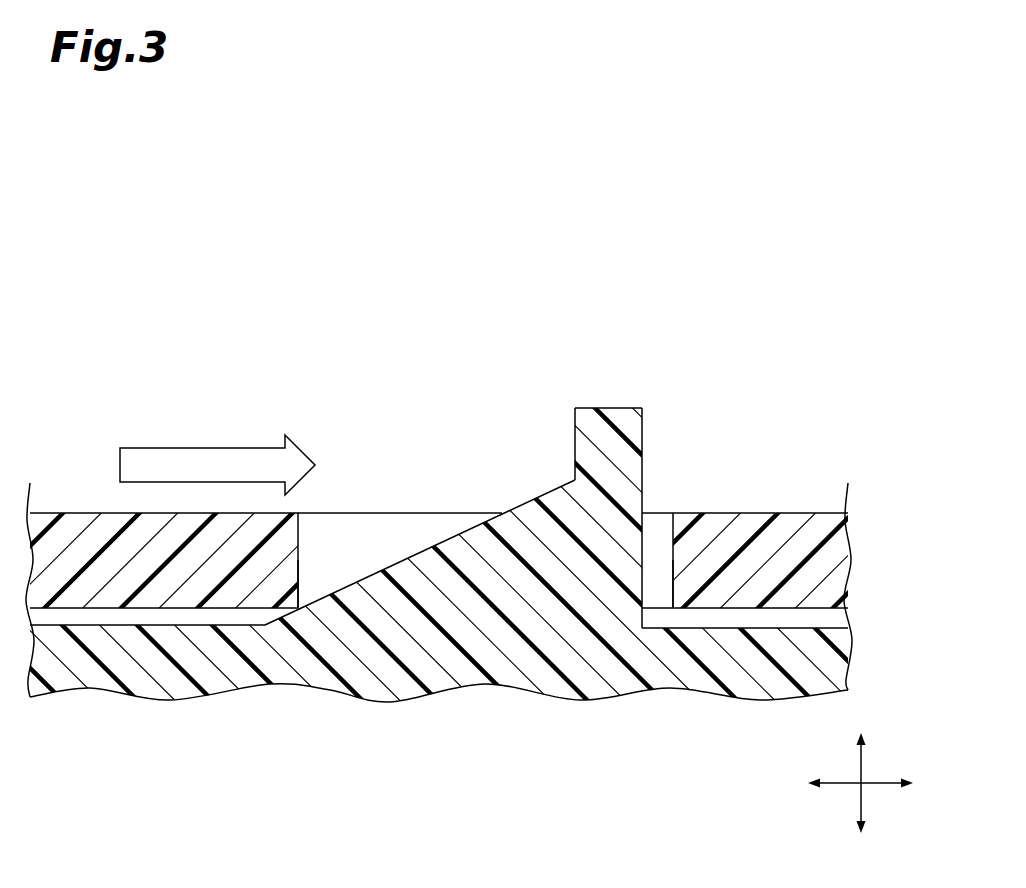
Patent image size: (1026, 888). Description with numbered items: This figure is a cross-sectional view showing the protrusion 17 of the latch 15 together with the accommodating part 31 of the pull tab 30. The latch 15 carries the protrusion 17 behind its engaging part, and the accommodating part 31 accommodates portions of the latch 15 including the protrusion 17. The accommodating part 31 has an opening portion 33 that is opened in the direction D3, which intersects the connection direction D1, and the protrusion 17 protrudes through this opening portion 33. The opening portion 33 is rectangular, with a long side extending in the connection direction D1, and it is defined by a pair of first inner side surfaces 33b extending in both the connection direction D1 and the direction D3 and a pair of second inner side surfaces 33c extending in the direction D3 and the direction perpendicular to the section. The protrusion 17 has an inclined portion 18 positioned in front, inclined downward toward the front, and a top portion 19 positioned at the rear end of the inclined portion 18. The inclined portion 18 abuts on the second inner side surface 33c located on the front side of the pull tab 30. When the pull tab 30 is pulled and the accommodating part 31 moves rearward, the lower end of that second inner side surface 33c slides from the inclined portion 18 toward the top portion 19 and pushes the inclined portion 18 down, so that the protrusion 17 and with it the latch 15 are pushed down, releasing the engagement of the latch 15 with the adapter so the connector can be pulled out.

The latch 15 is at (662, 247).
The protrusion 17 is at (625, 407).
The inclined portion 18 is at (433, 546).
The top portion 19 is at (585, 407).
The pull tab 30 is at (755, 511).
The accommodating part 31 is at (768, 517).
The opening portion 33 is at (302, 537).
The first inner side surface 33b is at (375, 527).
The second inner side surface 33c is at (302, 583).
The connection direction D1 is at (840, 788).
The direction D3 is at (865, 793).